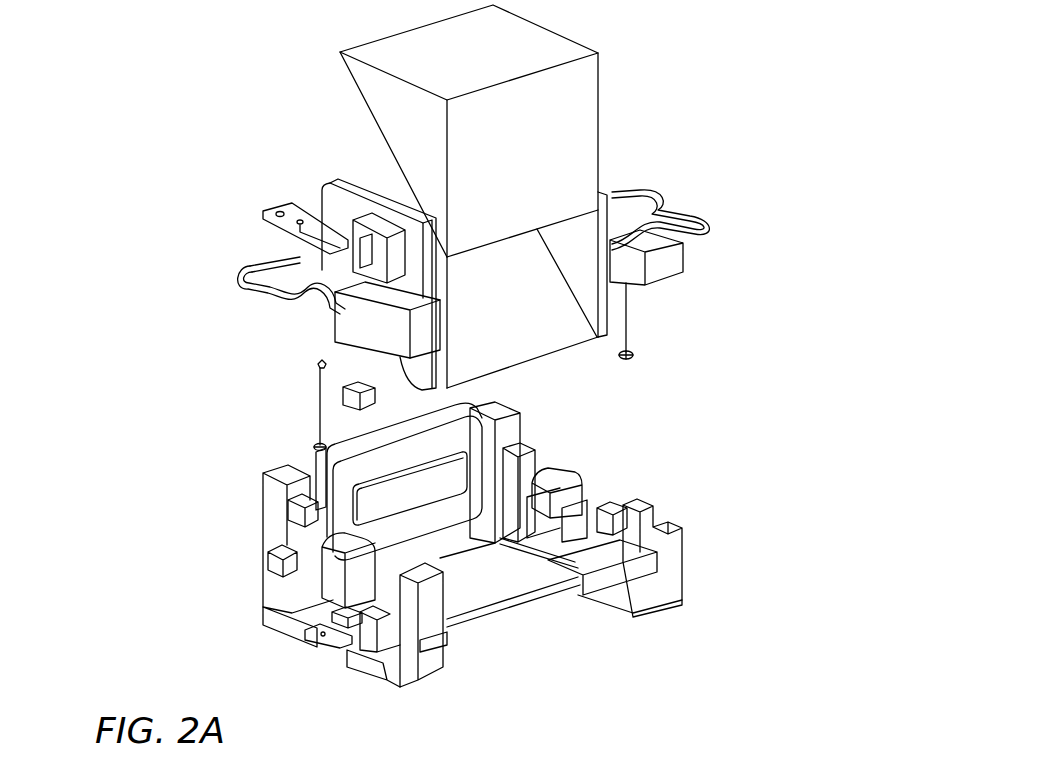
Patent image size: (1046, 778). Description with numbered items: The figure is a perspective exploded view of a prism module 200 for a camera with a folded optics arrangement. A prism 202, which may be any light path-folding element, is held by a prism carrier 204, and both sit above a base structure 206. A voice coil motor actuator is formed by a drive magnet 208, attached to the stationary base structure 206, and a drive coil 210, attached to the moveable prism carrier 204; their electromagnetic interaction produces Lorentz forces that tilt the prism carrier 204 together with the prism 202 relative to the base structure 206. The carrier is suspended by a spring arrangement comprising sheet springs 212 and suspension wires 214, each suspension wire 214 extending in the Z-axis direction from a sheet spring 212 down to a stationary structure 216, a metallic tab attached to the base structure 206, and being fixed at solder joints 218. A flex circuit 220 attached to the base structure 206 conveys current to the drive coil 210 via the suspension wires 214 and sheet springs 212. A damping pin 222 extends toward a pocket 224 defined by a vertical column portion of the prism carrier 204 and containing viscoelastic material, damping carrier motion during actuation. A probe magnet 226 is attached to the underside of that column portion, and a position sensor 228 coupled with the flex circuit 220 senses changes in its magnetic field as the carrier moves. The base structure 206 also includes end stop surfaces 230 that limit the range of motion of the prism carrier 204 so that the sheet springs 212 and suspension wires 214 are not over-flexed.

The prism module 200 is at (259, 38).
The prism 202 is at (603, 109).
The prism carrier 204 is at (390, 241).
The base structure 206 is at (514, 544).
The drive magnet 208 is at (324, 462).
The drive coil 210 is at (343, 495).
The sheet spring 212 is at (705, 212).
The suspension wire 214 is at (577, 367).
The stationary structure 216 is at (329, 651).
The joint 218 is at (624, 361).
The flex circuit 220 is at (447, 645).
The damping pin 222 is at (307, 221).
The pocket 224 is at (369, 259).
The probe magnet 226 is at (340, 392).
The position sensor 228 is at (307, 630).
The end stop surface 230 is at (330, 578).